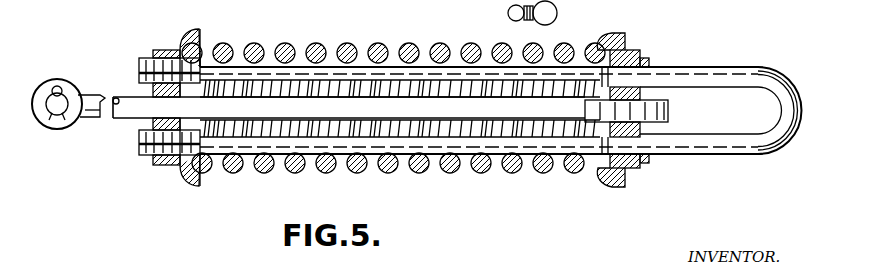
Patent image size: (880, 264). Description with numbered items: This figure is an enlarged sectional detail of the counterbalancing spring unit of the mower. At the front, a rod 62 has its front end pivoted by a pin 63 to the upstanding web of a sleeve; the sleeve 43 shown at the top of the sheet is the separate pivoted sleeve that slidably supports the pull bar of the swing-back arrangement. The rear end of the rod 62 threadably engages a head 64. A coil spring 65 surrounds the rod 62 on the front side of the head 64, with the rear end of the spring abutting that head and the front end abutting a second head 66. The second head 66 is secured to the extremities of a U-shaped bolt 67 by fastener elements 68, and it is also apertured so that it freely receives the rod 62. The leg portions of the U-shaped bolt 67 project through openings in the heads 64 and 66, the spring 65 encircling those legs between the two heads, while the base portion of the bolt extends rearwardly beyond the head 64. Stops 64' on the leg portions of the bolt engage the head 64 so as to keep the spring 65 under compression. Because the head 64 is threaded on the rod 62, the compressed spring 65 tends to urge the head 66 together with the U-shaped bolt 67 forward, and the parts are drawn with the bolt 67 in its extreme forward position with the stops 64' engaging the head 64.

The sleeve 43 is at (575, 12).
The rod 62 is at (87, 117).
The pin 63 is at (63, 100).
The head 64 is at (626, 122).
The stops 64' is at (670, 109).
The coil spring 65 is at (341, 43).
The second head 66 is at (197, 34).
The U-shaped bolt 67 is at (688, 68).
The fastener elements 68 is at (139, 69).